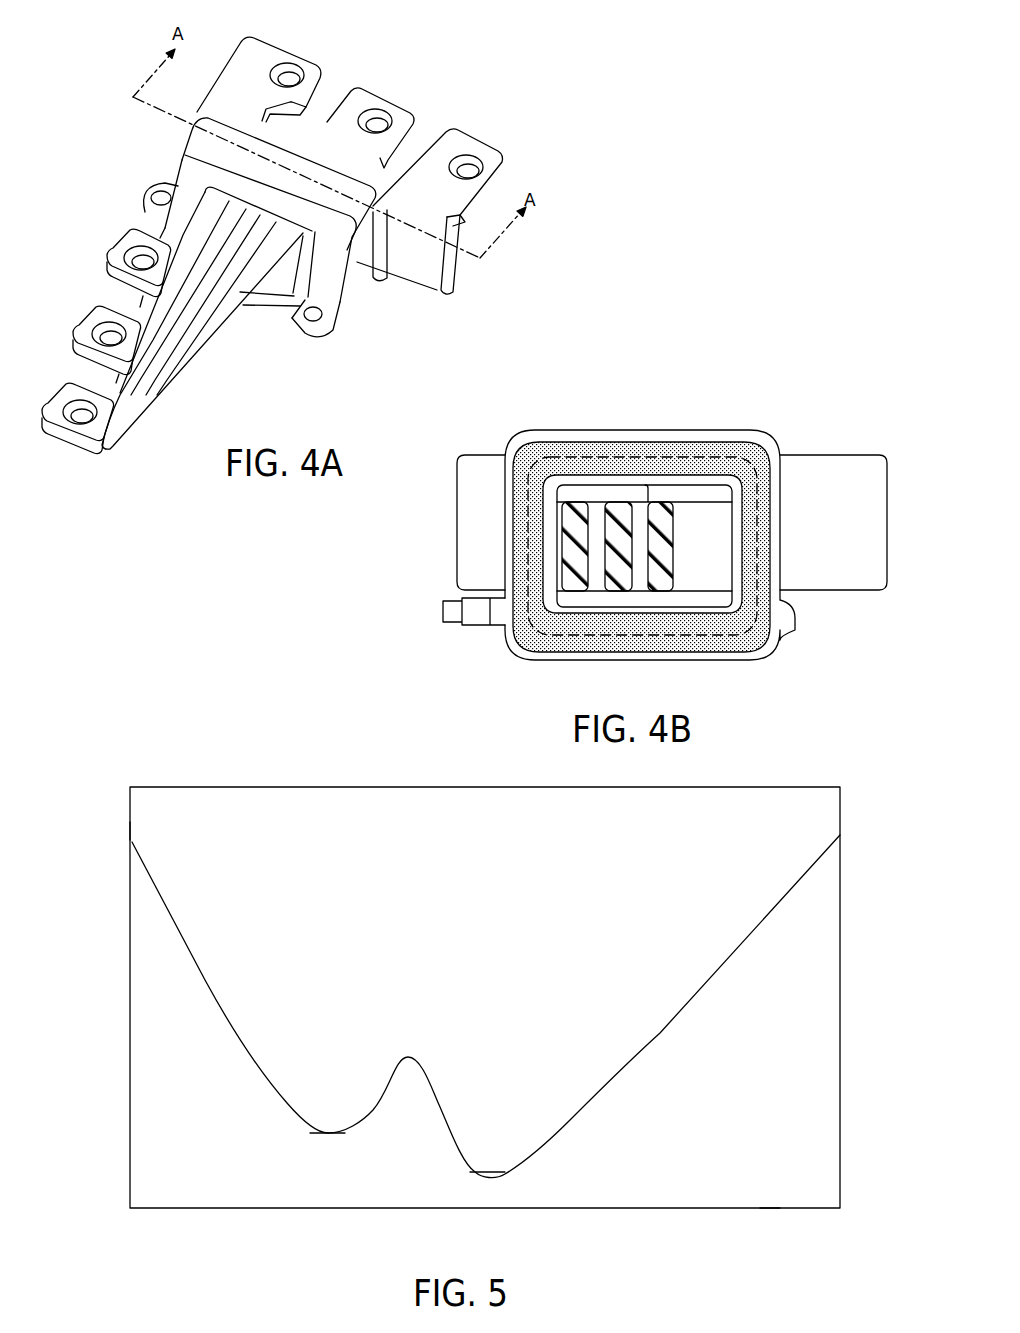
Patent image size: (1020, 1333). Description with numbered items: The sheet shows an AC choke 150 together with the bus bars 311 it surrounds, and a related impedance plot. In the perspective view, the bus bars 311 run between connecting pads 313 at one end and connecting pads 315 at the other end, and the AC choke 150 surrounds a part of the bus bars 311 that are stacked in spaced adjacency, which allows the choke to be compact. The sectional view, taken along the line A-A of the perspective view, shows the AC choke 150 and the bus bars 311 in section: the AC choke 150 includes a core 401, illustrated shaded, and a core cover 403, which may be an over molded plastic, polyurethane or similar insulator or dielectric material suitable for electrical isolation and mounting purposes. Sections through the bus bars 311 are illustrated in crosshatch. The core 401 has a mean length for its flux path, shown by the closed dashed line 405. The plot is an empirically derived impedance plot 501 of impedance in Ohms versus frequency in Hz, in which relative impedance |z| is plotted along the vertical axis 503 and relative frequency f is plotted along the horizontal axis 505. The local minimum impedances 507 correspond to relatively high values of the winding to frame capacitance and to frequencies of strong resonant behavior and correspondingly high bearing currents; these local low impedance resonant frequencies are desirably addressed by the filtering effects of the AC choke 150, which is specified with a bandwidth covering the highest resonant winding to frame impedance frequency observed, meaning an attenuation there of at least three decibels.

In FIG. 4A, the AC choke 150 is at (151, 163).
In FIG. 4B, the AC choke 150 is at (603, 390).
In FIG. 4A, the bus bars 311 is at (227, 362).
In FIG. 4B, the bus bars 311 is at (693, 563).
In FIG. 4A, the connecting pads 313 is at (131, 232).
In FIG. 4A, the connecting pads 315 is at (262, 52).
In FIG. 4B, the connecting pads 315 is at (478, 455).
In FIG. 4B, the core 401 is at (734, 447).
In FIG. 4B, the core cover 403 is at (668, 432).
In FIG. 4B, the closed dashed line 405 is at (563, 455).
In FIG. 5, the impedance plot 501 is at (287, 768).
In FIG. 5, the vertical axis 503 is at (130, 827).
In FIG. 5, the horizontal axis 505 is at (770, 1208).
In FIG. 5, the local minimum impedances 507 is at (323, 1143).